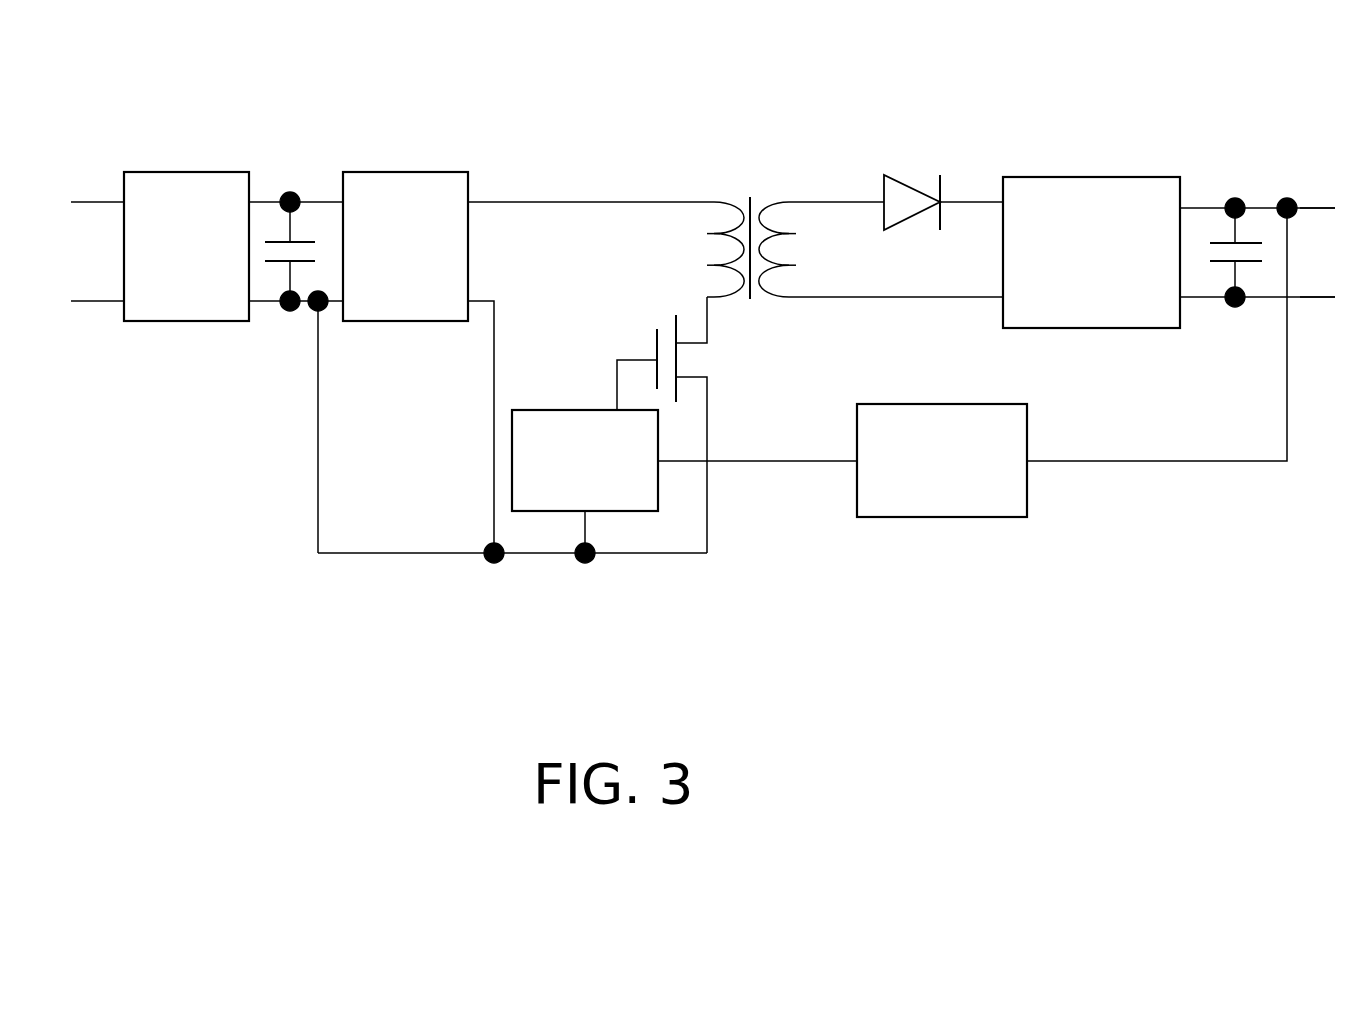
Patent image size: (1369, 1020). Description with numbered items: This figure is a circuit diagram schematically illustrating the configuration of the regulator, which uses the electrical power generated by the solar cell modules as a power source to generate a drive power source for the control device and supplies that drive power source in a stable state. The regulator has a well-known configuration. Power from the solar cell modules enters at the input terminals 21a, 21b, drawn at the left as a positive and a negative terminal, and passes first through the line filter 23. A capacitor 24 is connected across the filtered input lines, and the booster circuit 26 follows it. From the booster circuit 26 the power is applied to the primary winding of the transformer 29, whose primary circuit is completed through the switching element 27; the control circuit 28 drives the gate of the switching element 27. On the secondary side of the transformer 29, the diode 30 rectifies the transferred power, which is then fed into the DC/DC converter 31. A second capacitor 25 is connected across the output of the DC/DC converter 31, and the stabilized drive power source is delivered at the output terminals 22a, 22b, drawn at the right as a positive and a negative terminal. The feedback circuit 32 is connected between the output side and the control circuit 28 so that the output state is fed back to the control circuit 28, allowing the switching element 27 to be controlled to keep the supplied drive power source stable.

The input terminal 21a is at (96, 200).
The input terminal 21b is at (93, 305).
The output terminal 22a is at (1318, 208).
The output terminal 22b is at (1316, 300).
The line filter 23 is at (187, 172).
The capacitor 24 is at (306, 242).
The capacitor 25 is at (1248, 243).
The booster circuit 26 is at (423, 172).
The switching element 27 is at (678, 360).
The control circuit 28 is at (530, 410).
The transformer 29 is at (731, 202).
The diode 30 is at (897, 175).
The DC/DC converter 31 is at (1087, 177).
The feedback circuit 32 is at (943, 520).